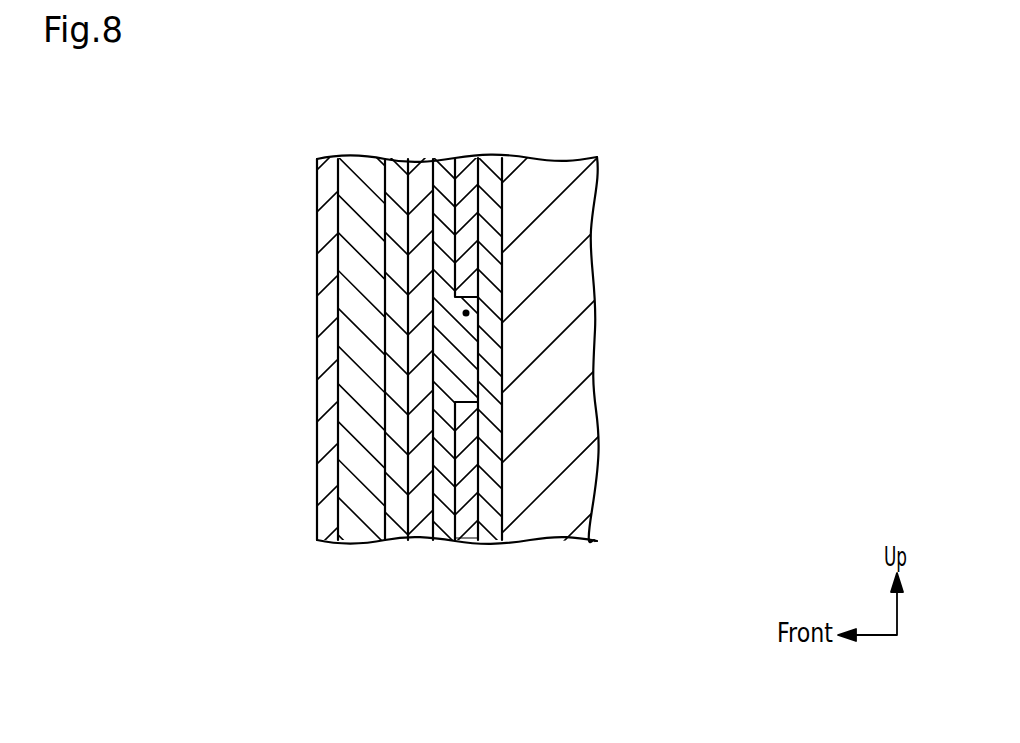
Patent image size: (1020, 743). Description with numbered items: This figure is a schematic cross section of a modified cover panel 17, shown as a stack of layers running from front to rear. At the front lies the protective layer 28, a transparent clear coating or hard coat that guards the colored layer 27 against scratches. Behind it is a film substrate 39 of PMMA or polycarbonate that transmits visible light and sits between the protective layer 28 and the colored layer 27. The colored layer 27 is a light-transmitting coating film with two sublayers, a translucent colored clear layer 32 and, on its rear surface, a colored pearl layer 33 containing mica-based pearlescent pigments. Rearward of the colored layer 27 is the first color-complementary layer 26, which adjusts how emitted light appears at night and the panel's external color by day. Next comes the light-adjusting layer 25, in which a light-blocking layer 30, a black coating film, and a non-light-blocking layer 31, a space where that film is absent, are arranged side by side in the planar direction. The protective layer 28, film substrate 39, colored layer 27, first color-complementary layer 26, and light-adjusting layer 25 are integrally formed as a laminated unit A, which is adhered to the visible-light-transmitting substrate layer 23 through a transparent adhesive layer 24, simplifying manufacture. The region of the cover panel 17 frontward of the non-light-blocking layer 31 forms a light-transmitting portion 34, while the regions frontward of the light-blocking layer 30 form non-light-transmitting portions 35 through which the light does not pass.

The cover panel 17 is at (699, 139).
The substrate layer 23 is at (545, 534).
The adhesive layer 24 is at (488, 532).
The light-adjusting layer 25 is at (466, 554).
The first color-complementary layer 26 is at (443, 535).
The colored layer 27 is at (438, 581).
The protective layer 28 is at (330, 537).
The light-blocking layer 30 is at (468, 176).
The non-light-blocking layer 31 is at (466, 313).
The colored clear layer 32 is at (397, 535).
The colored pearl layer 33 is at (418, 535).
The light-transmitting portion 34 is at (311, 304).
The non-light-transmitting portion 35 is at (311, 160).
The film substrate 39 is at (358, 535).
The laminated unit A is at (478, 150).